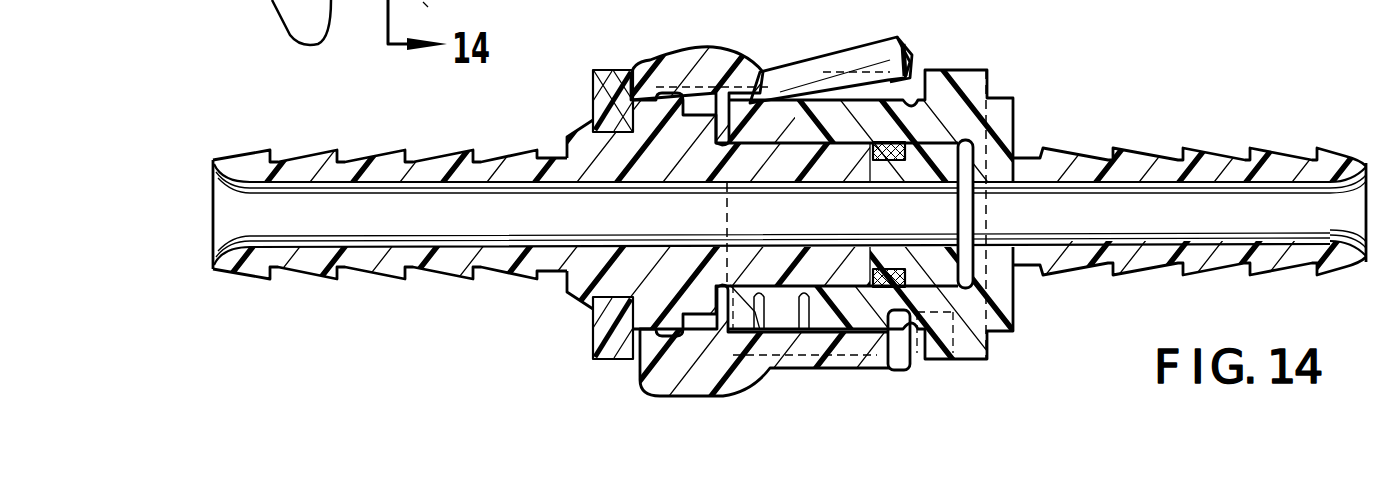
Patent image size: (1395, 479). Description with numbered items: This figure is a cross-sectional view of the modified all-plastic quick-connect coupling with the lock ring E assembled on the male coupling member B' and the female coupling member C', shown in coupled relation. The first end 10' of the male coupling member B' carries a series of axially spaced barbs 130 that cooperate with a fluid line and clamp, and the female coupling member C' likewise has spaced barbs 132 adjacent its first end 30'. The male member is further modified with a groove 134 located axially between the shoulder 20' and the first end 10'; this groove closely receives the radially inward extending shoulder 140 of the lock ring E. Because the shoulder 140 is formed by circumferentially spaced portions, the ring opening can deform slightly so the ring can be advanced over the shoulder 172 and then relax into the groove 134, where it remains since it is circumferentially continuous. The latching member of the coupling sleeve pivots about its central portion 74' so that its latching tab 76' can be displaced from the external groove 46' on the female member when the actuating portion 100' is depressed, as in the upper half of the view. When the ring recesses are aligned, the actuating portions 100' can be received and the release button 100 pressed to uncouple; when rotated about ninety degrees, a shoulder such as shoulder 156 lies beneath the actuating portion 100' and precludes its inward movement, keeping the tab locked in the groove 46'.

The first end of male coupling member 10' is at (567, 220).
The barbs 130 is at (307, 150).
The shoulder 20' is at (567, 219).
The shoulder 172 is at (582, 295).
The groove 134 is at (593, 115).
The radially inward extending shoulder 140 is at (605, 298).
The actuating portion 100' is at (739, 75).
The actuating portion or release button 100 is at (755, 347).
The central portion 74' is at (830, 51).
The latching tab 76' is at (913, 41).
The external groove 46' is at (886, 196).
The barbs 132 is at (1147, 152).
The first end of female coupling member 30' is at (1353, 177).
The shoulder 156 is at (445, 11).
The lock ring E is at (609, 55).
The male coupling member B' is at (219, 307).
The female coupling member C' is at (1134, 316).